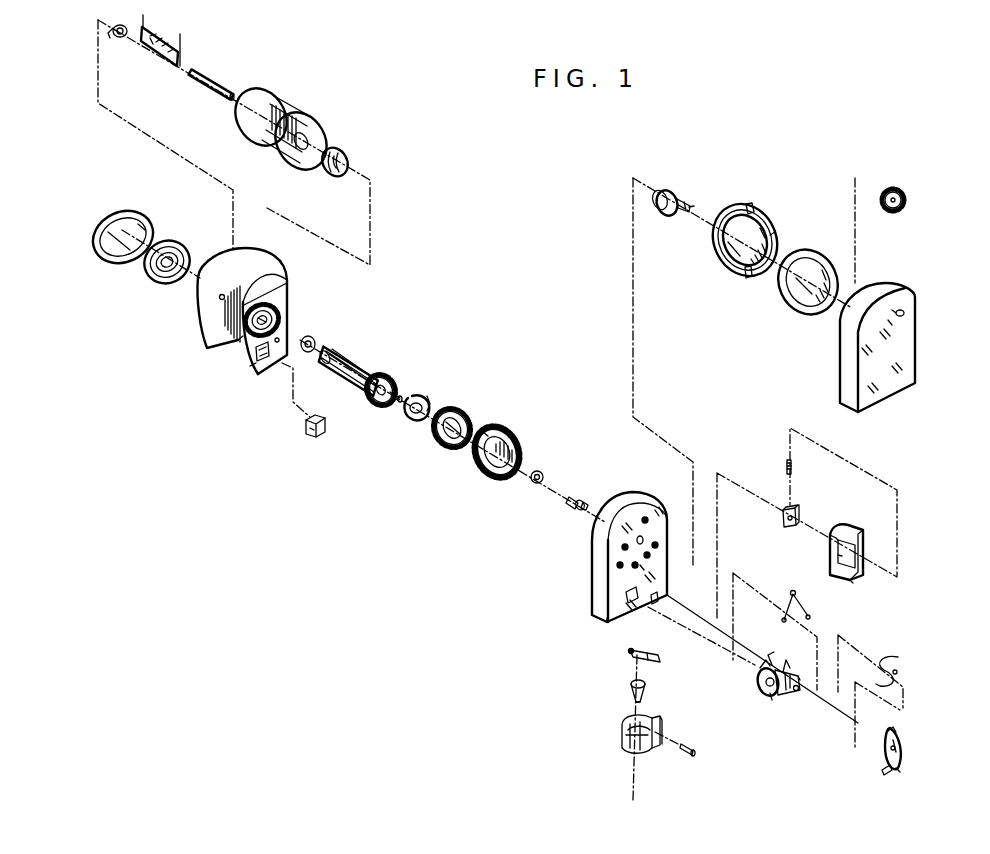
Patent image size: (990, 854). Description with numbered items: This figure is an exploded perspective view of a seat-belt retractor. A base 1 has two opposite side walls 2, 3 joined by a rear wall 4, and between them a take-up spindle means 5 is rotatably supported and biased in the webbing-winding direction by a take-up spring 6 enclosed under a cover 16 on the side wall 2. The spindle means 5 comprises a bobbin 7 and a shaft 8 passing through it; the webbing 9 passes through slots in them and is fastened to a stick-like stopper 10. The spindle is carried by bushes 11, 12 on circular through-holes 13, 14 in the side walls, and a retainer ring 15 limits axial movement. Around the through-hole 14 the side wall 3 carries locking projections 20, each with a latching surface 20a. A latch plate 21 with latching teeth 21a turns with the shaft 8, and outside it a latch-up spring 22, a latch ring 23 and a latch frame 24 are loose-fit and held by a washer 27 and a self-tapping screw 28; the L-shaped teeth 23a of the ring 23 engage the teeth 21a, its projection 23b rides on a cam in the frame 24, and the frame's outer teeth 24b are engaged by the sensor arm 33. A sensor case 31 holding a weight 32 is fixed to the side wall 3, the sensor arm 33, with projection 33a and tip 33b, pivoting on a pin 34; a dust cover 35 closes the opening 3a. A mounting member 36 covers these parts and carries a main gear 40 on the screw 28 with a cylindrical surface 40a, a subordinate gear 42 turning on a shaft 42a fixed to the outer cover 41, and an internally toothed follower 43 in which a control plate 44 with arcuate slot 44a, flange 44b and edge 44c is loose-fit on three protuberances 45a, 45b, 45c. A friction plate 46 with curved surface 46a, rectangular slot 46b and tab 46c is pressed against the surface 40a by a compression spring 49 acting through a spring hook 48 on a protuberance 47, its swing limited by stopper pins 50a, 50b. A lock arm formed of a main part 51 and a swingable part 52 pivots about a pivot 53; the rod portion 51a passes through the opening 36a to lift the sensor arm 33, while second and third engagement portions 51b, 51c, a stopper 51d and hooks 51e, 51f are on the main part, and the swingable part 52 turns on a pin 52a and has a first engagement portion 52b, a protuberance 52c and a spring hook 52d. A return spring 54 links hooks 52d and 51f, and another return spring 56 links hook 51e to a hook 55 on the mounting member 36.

The base 1 is at (248, 236).
The side wall 2 is at (203, 303).
The side wall 3 is at (243, 360).
The opening 3a is at (263, 362).
The rear wall 4 is at (268, 278).
The take-up spindle means 5 is at (362, 166).
The take-up spring 6 is at (146, 270).
The bobbin 7 is at (303, 113).
The shaft 8 is at (337, 348).
The webbing 9 is at (160, 33).
The stick-like stopper 10 is at (220, 92).
The bush 11 is at (119, 42).
The bush 12 is at (312, 335).
The circular through-hole 13 is at (222, 293).
The circular through-hole 14 is at (252, 328).
The retainer ring 15 is at (343, 148).
The cover 16 is at (109, 202).
The locking projections 20 is at (218, 332).
The latching surface 20a is at (257, 373).
The latch plate 21 is at (386, 373).
The latching teeth 21a is at (388, 401).
The latch-up spring 22 is at (416, 395).
The latch ring 23 is at (466, 411).
The L-shaped teeth 23a is at (452, 410).
The projection 23b is at (440, 416).
The latch frame 24 is at (520, 448).
The teeth 24b is at (507, 430).
The washer 27 is at (537, 484).
The self-tapping screw 28 is at (578, 496).
The sensor case 31 is at (620, 748).
The weight 32 is at (632, 703).
The sensor arm 33 is at (658, 664).
The projection 33a is at (630, 682).
The tip 33b is at (629, 652).
The pin 34 is at (688, 745).
The dust cover 35 is at (327, 420).
The mounting member 36 is at (632, 497).
The opening 36a is at (623, 610).
The main gear 40 is at (681, 190).
The cylindrical surface 40a is at (667, 182).
The outer cover 41 is at (908, 362).
The subordinate gear 42 is at (898, 214).
The shaft 42a is at (906, 313).
The follower 43 is at (823, 242).
The control plate 44 is at (767, 214).
The arcuate slot 44a is at (777, 233).
The flange 44b is at (748, 277).
The edge 44c is at (747, 207).
The protuberance 45a is at (623, 548).
The protuberance 45b is at (657, 545).
The protuberance 45c is at (647, 518).
The friction plate 46 is at (865, 546).
The curved surface 46a is at (850, 524).
The rectangular slot 46b is at (842, 557).
The tab 46c is at (862, 575).
The protuberance 47 is at (638, 566).
The spring hook 48 is at (797, 509).
The compression spring 49 is at (793, 463).
The stopper pin 50a is at (618, 567).
The stopper pin 50b is at (650, 555).
The main part 51 is at (758, 685).
The rod portion 51a is at (758, 660).
The second engagement portion 51b is at (778, 667).
The third engagement portion 51c is at (763, 658).
The stopper 51d is at (772, 696).
The spring hook 51e is at (795, 693).
The spring hook 51f is at (793, 668).
The swingable part 52 is at (903, 760).
The pin 52a is at (905, 748).
The first engagement portion 52b is at (900, 728).
The protuberance 52c is at (902, 768).
The spring hook 52d is at (886, 768).
The pivot 53 is at (628, 594).
The return spring 54 is at (893, 662).
The hook 55 is at (653, 600).
The return spring 56 is at (812, 604).